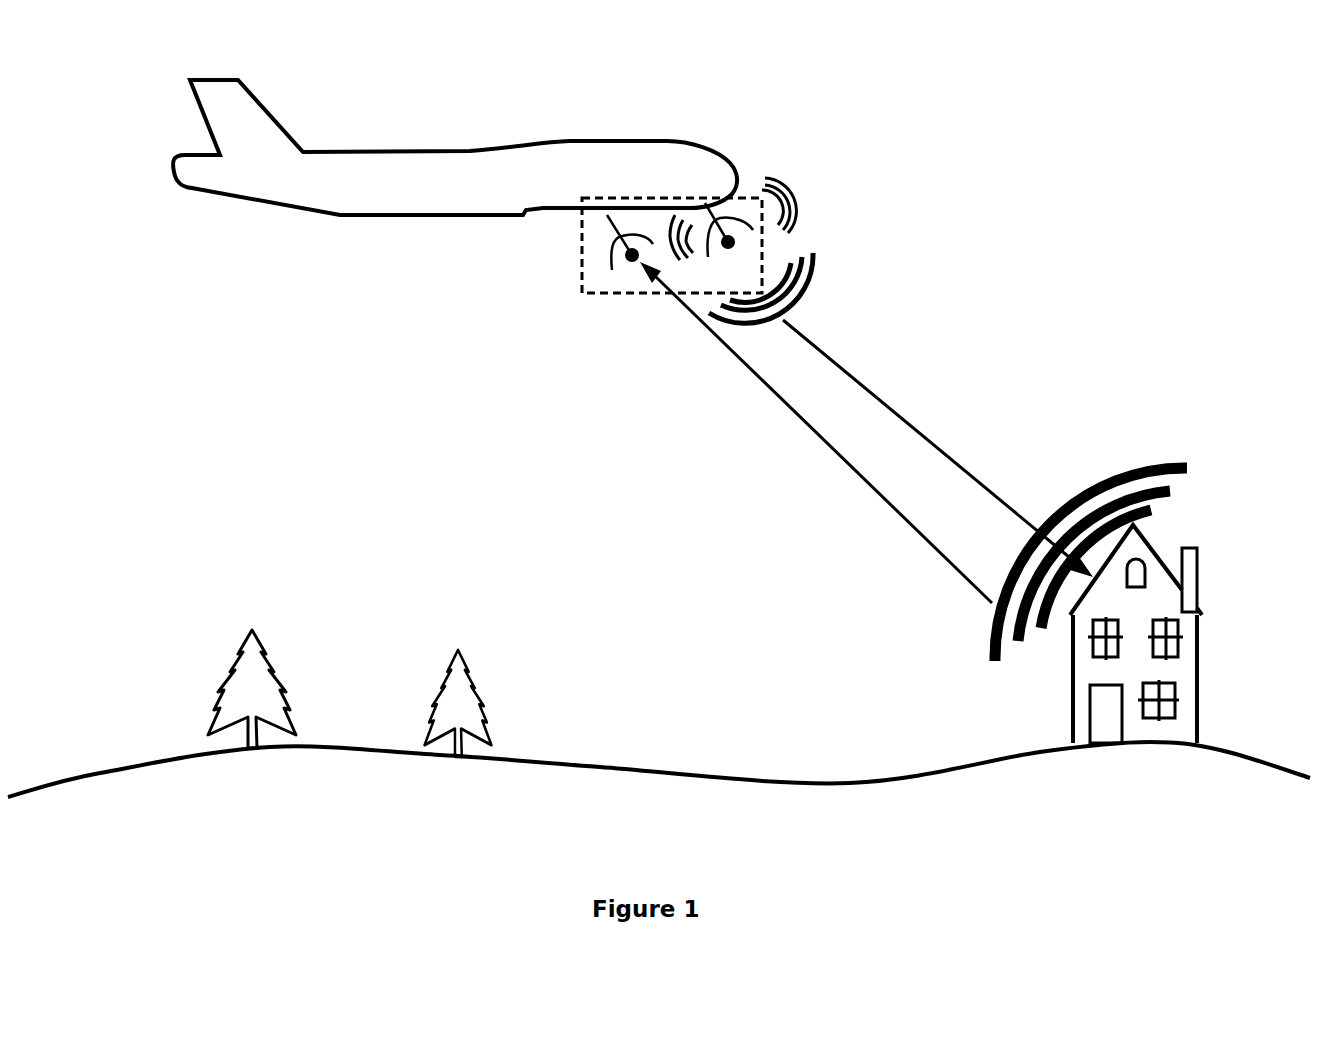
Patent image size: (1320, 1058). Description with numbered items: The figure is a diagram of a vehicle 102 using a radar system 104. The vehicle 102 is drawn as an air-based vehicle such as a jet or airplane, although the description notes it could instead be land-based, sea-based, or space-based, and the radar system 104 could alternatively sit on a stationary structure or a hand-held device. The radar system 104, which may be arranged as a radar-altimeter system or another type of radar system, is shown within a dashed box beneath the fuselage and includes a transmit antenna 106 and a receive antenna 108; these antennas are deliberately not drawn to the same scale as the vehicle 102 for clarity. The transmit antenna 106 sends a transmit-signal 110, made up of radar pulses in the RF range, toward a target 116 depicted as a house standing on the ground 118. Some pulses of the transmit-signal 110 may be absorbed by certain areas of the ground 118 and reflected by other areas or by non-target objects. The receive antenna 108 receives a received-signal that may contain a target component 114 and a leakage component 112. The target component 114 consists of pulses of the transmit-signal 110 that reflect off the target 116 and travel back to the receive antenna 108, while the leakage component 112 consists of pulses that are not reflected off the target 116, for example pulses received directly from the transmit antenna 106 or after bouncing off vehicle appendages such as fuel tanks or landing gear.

The vehicle 102 is at (378, 189).
The radar system 104 is at (584, 294).
The transmit antenna 106 is at (745, 226).
The receive antenna 108 is at (615, 228).
The transmit-signal 110 is at (806, 290).
The leakage component 112 is at (710, 272).
The target component 114 is at (1117, 466).
The target 116 is at (1198, 693).
The ground 118 is at (736, 777).